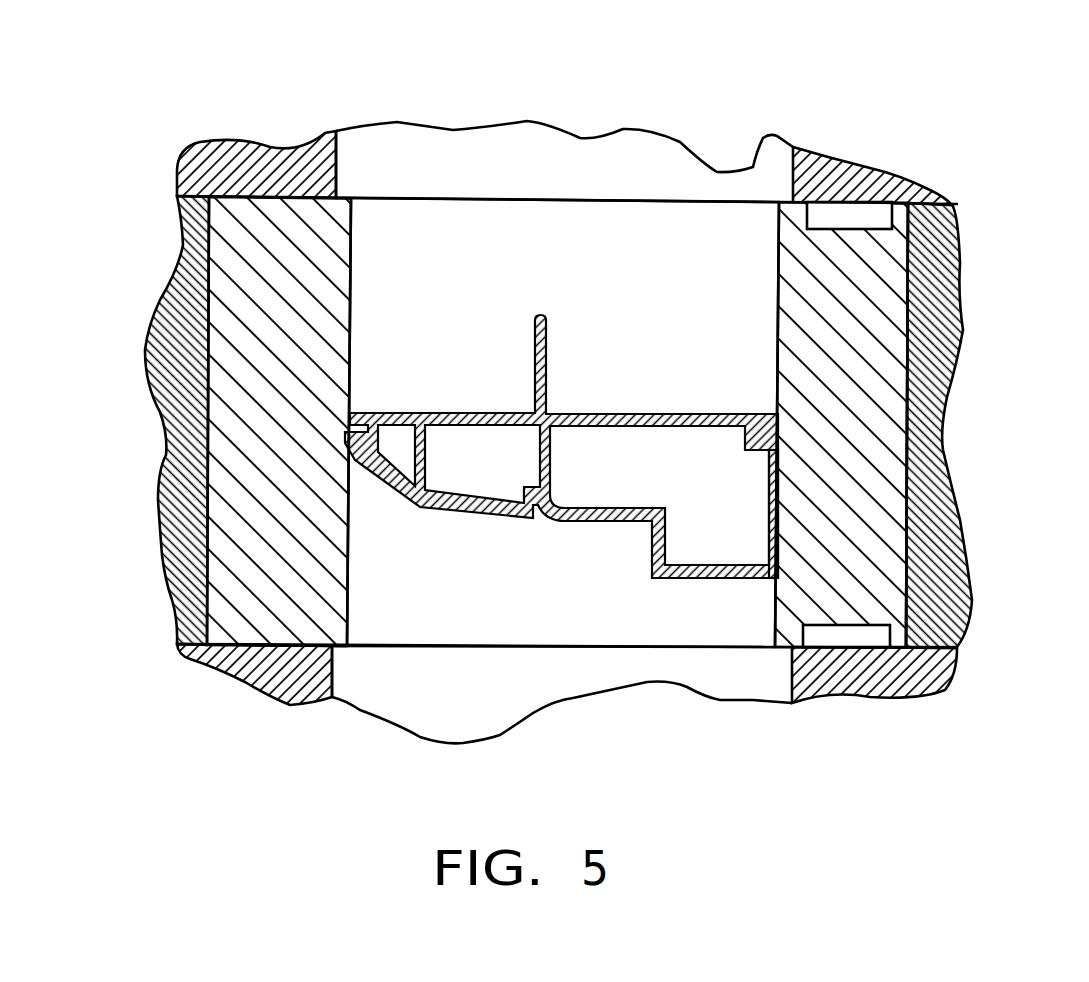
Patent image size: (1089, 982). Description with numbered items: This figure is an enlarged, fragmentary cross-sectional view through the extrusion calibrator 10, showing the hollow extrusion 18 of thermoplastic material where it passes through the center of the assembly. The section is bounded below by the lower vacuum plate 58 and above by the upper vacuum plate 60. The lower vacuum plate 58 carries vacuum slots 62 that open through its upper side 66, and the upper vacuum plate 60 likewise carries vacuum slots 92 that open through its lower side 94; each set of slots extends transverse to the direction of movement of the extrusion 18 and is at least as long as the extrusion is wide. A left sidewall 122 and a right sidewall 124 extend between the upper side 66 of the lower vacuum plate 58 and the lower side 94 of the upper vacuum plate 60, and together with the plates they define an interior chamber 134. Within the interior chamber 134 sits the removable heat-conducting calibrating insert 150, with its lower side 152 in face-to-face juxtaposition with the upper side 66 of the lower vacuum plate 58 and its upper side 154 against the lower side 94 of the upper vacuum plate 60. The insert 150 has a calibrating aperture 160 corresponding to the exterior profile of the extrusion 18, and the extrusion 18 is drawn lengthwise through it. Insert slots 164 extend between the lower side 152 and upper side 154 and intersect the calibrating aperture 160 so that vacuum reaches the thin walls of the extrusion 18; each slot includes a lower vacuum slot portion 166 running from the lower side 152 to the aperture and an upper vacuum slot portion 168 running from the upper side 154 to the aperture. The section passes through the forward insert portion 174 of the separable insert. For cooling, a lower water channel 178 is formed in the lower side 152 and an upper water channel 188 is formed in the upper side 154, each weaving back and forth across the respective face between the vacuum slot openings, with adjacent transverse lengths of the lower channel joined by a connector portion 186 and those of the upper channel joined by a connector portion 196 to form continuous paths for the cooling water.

The extrusion calibrator 10 is at (1028, 147).
The hollow extrusion 18 is at (773, 517).
The lower vacuum plate 58 is at (502, 735).
The upper vacuum plate 60 is at (490, 124).
The vacuum slots 62 is at (535, 697).
The upper side 66 is at (208, 640).
The vacuum slots 92 is at (550, 147).
The lower side 94 is at (240, 218).
The left sidewall 122 is at (965, 510).
The right sidewall 124 is at (158, 468).
The interior chamber 134 is at (914, 297).
The calibrating insert 150 is at (250, 680).
The lower side 152 is at (318, 660).
The upper side 154 is at (232, 240).
The calibrating aperture 160 is at (752, 467).
The insert slots 164 is at (444, 640).
The lower vacuum slot portion 166 is at (643, 613).
The upper vacuum slot portion 168 is at (417, 210).
The forward insert portion 174 is at (905, 567).
The lower water channel 178 is at (833, 690).
The connector portion 186 is at (870, 640).
The upper water channel 188 is at (877, 202).
The connector portion 196 is at (850, 215).